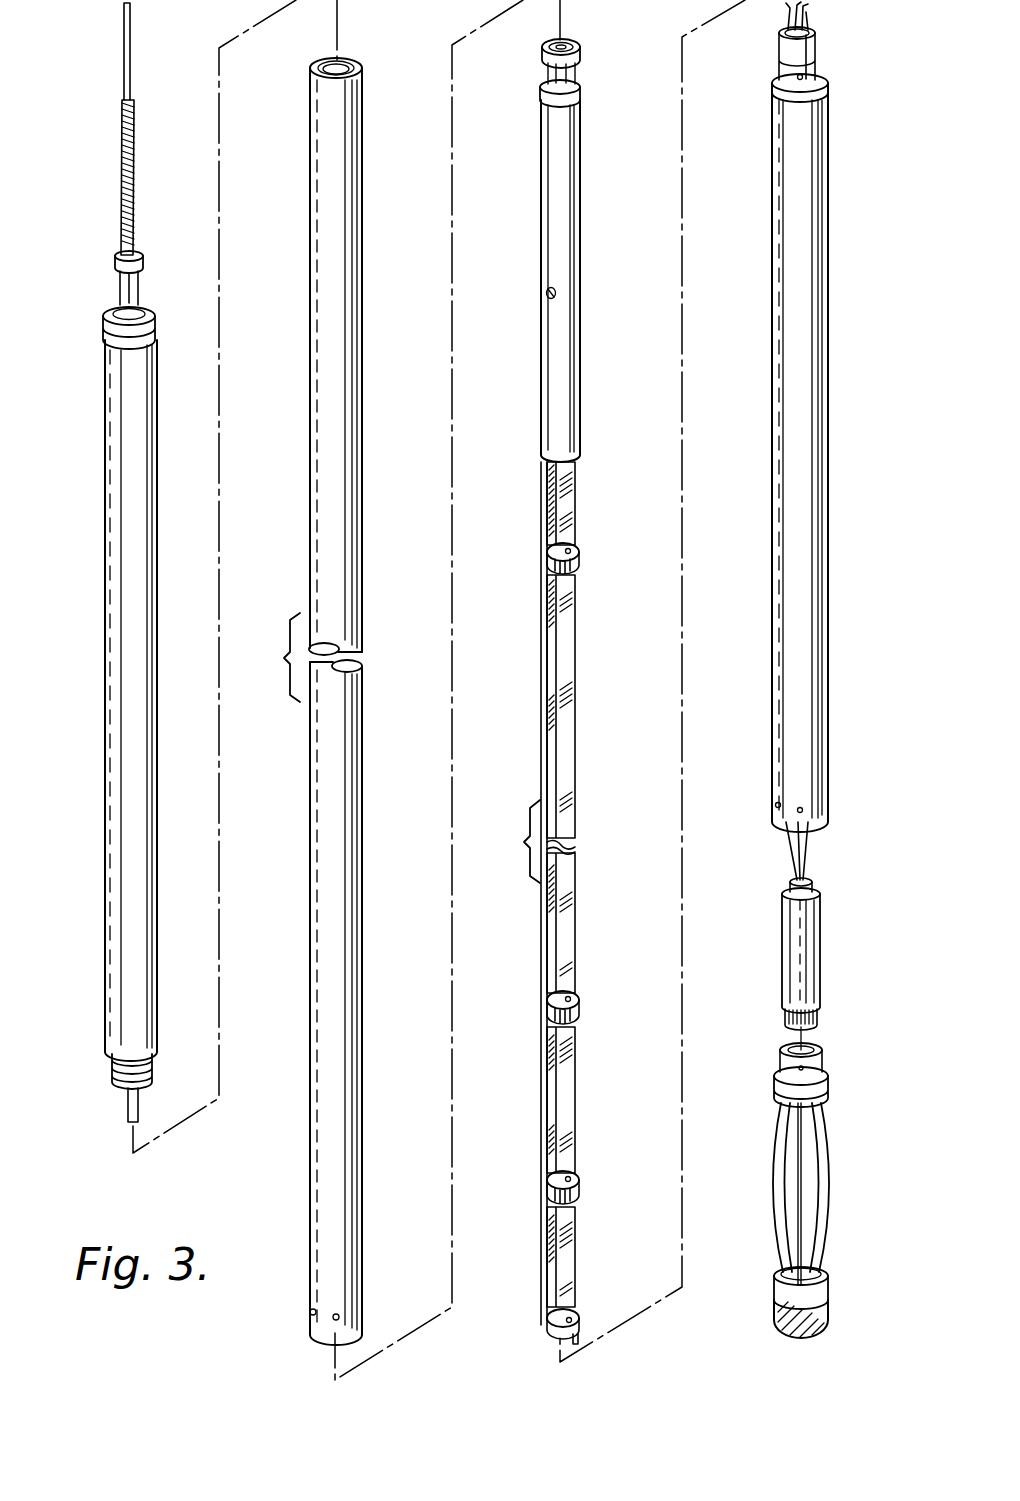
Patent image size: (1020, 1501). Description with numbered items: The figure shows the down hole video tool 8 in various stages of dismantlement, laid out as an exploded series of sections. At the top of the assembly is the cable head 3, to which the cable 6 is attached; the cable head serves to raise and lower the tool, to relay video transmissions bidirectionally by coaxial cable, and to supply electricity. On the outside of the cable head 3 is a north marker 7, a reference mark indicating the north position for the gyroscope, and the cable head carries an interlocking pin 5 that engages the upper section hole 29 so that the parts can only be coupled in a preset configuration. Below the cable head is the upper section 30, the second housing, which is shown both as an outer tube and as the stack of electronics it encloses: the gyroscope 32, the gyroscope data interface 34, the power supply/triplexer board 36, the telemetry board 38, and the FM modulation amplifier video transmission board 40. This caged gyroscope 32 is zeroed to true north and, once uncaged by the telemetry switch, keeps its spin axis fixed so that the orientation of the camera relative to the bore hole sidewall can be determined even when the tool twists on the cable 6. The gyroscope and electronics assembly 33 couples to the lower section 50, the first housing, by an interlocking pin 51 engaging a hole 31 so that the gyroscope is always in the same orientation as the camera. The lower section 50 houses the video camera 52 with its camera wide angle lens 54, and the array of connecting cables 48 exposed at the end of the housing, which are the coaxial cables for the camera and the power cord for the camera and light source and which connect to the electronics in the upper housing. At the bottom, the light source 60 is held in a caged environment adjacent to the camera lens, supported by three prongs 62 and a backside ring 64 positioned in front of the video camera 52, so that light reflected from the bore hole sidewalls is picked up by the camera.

The cable head 3 is at (105, 553).
The interlocking pin 5 is at (157, 1057).
The cable 6 is at (122, 200).
The north marker 7 is at (148, 312).
The down hole video tool 8 is at (101, 143).
The upper section hole 29 is at (363, 65).
The upper section (second housing) 30 is at (363, 222).
The hole 31 is at (815, 33).
The gyroscope 32 is at (583, 222).
The channel assembly 33 is at (542, 213).
The gyroscope data interface 34 is at (578, 498).
The power supply/triplexer board 36 is at (572, 678).
The telemetry board 38 is at (577, 1088).
The FM modulation amplifier video transmission board 40 is at (578, 1256).
The connecting cables 48 is at (812, 17).
The lower section (first housing) 50 is at (830, 430).
The interlocking pin 51 is at (577, 1330).
The video camera 52 is at (821, 942).
The camera wide angle lens 54 is at (818, 1022).
The light source 60 is at (829, 1312).
The prongs 62 is at (803, 1178).
The backside ring 64 is at (825, 1270).